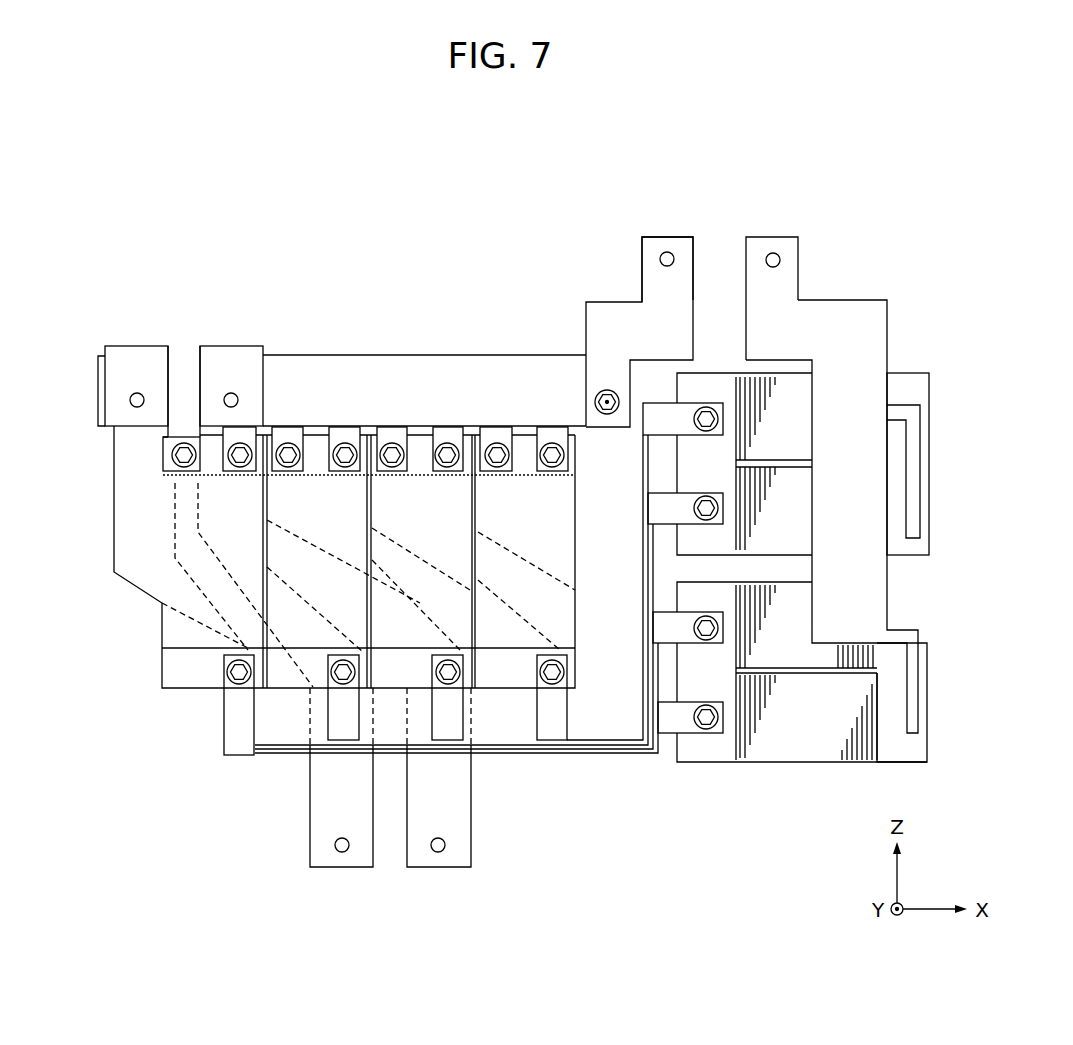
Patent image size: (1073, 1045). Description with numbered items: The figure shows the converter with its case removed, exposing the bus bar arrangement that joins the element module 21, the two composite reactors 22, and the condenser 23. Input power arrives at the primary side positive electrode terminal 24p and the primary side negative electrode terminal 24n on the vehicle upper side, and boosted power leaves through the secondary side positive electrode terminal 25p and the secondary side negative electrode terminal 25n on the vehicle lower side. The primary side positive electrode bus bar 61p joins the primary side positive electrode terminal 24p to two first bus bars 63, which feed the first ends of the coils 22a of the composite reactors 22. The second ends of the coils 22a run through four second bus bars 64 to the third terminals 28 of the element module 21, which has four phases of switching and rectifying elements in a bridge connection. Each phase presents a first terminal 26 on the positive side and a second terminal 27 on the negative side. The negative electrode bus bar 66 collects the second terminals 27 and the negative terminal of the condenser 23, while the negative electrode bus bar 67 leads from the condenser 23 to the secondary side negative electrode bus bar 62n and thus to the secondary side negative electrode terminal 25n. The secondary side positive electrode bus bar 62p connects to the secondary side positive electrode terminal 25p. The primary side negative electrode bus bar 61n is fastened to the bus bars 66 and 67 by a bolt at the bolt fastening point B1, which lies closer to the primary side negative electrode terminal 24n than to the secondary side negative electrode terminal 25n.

The element module 21 is at (150, 658).
The composite reactor 22 is at (852, 615).
The coil 22a is at (792, 438).
The condenser 23 is at (103, 392).
The primary side negative electrode terminal 24n is at (662, 237).
The primary side positive electrode terminal 24p is at (767, 237).
The secondary side negative electrode terminal 25n is at (438, 868).
The secondary side positive electrode terminal 25p is at (340, 868).
The first terminal 26 is at (172, 456).
The second terminal 27 is at (240, 471).
The third terminal 28 is at (343, 658).
The primary side negative electrode bus bar 61n is at (603, 320).
The primary side positive electrode bus bar 61p is at (870, 318).
The secondary side negative electrode bus bar 62n is at (231, 360).
The secondary side positive electrode bus bar 62p is at (137, 360).
The first bus bar 63 is at (913, 504).
The second bus bar 64 is at (577, 756).
The negative electrode bus bar 66 is at (337, 372).
The negative electrode bus bar 67 is at (440, 372).
The bolt fastening point B1 is at (607, 400).